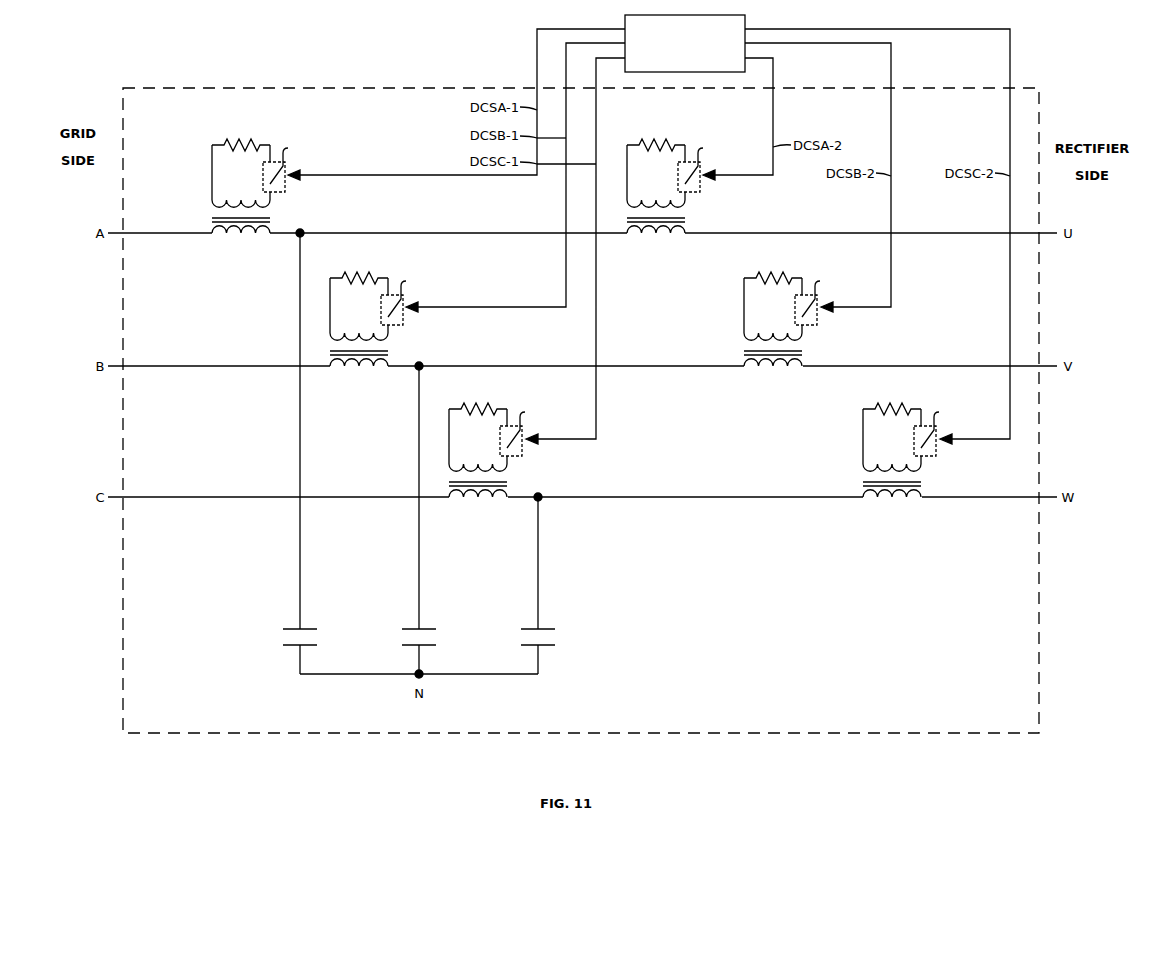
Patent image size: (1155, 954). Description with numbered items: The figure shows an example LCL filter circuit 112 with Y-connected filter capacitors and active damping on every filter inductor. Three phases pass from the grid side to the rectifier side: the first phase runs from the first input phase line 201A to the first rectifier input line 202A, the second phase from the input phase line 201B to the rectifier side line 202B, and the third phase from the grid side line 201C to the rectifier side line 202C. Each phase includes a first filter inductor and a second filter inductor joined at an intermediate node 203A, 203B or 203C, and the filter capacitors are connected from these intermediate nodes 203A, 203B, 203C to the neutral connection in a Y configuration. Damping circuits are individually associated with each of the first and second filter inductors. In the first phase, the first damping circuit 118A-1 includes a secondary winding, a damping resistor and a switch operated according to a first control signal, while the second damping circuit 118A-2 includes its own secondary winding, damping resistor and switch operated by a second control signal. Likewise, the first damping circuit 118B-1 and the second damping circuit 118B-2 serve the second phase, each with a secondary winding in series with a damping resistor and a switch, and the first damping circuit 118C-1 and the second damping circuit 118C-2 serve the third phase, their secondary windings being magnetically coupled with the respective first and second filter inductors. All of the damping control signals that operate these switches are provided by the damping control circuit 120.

The LCL filter circuit 112 is at (155, 88).
The damping control circuit 120 is at (623, 23).
The first damping circuit 118A-1 is at (282, 182).
The second damping circuit 118A-2 is at (697, 182).
The first damping circuit 118B-1 is at (400, 315).
The second damping circuit 118B-2 is at (814, 315).
The first damping circuit 118C-1 is at (519, 446).
The second damping circuit 118C-2 is at (933, 446).
The first input phase line 201A is at (183, 233).
The input phase line 201B is at (183, 366).
The grid side line 201C is at (183, 497).
The first rectifier input line 202A is at (965, 233).
The rectifier side line 202B is at (965, 366).
The rectifier side line 202C is at (965, 497).
The intermediate node 203A is at (300, 540).
The intermediate node 203B is at (419, 540).
The intermediate node 203C is at (538, 540).